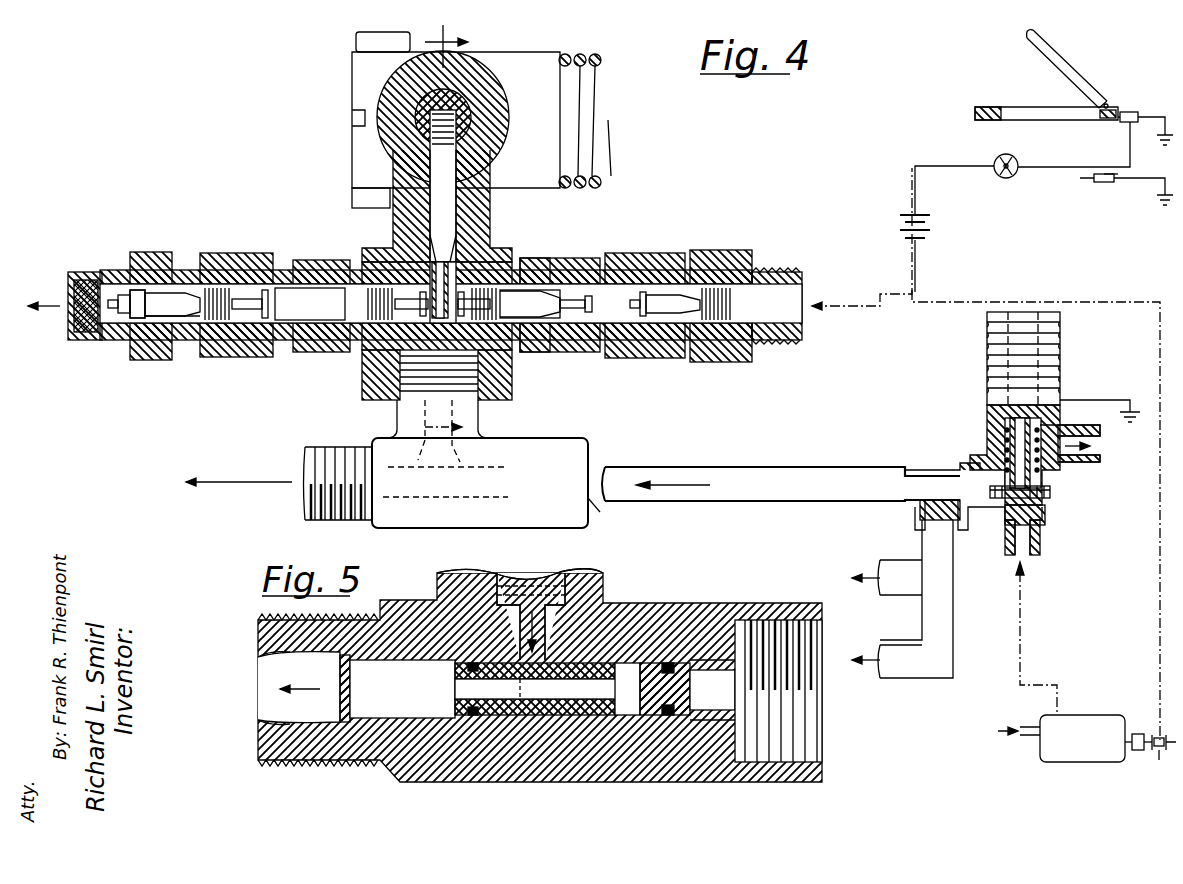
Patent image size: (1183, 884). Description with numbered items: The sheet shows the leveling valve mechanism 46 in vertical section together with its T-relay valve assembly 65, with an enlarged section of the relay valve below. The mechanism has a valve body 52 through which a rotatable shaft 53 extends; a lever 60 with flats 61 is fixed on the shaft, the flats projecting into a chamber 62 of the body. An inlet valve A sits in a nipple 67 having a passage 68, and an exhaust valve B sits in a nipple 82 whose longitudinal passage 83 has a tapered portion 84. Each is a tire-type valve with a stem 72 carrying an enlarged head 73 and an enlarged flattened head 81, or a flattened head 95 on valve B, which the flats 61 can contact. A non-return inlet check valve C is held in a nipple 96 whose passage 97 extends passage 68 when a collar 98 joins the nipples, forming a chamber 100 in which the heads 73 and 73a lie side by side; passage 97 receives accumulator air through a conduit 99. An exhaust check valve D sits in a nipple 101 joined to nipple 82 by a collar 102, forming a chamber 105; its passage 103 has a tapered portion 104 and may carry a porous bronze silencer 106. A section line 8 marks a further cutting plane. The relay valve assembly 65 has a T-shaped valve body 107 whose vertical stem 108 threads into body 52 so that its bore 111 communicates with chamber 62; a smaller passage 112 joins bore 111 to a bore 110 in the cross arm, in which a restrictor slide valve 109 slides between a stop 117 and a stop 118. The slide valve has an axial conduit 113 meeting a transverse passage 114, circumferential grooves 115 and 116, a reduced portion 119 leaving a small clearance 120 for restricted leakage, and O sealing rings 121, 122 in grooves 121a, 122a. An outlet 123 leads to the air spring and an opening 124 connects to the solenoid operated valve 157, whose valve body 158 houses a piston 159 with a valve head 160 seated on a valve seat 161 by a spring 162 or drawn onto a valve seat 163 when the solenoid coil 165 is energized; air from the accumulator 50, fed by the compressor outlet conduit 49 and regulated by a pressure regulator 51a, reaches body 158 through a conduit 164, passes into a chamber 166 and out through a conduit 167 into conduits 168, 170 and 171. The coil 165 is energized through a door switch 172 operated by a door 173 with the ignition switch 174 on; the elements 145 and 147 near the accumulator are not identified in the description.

In FIG. 4, the section line 8 is at (452, 230).
In FIG. 4, the leveling valve mechanism 46 is at (630, 207).
In FIG. 4, the outlet conduit 49 is at (1025, 737).
In FIG. 4, the air accumulator 50 is at (1082, 738).
In FIG. 4, the pressure regulator 51a is at (1138, 734).
In FIG. 4, the valve body 52 is at (485, 212).
In FIG. 4, the shaft 53 is at (462, 119).
In FIG. 4, the lever 60 is at (435, 222).
In FIG. 4, the flats 61 is at (448, 283).
In FIG. 4, the chamber 62 is at (380, 372).
In FIG. 4, the relay valve assembly 65 is at (592, 442).
In FIG. 5, the relay valve assembly 65 is at (678, 590).
In FIG. 4, the nipple 67 is at (572, 258).
In FIG. 4, the passage 68 is at (535, 262).
In FIG. 4, the stem 72 is at (118, 315).
In FIG. 4, the enlarged head 73 is at (135, 292).
In FIG. 4, the head 73a is at (658, 262).
In FIG. 4, the enlarged flattened head 81 is at (264, 290).
In FIG. 4, the nipple 82 is at (300, 352).
In FIG. 4, the longitudinal passage 83 is at (335, 352).
In FIG. 4, the tapered portion 84 is at (335, 262).
In FIG. 4, the flattened head 95 is at (425, 320).
In FIG. 4, the nipple 96 is at (728, 252).
In FIG. 4, the passage 97 is at (790, 328).
In FIG. 4, the collar 98 is at (660, 358).
In FIG. 4, the conduit 99 is at (880, 294).
In FIG. 4, the chamber 100 is at (622, 262).
In FIG. 4, the nipple 101 is at (155, 362).
In FIG. 4, the collar 102 is at (222, 253).
In FIG. 4, the passage 103 is at (165, 318).
In FIG. 4, the tapered portion 104 is at (190, 262).
In FIG. 4, the chamber 105 is at (232, 357).
In FIG. 4, the silencer 106 is at (68, 280).
In FIG. 4, the valve body 107 is at (515, 440).
In FIG. 5, the valve body 107 is at (758, 605).
In FIG. 4, the vertical stem 108 is at (398, 408).
In FIG. 5, the vertical stem 108 is at (437, 580).
In FIG. 5, the restrictor slide valve 109 is at (650, 662).
In FIG. 4, the bore 110 is at (430, 498).
In FIG. 5, the bore 110 is at (388, 715).
In FIG. 4, the bore 111 is at (418, 468).
In FIG. 5, the bore 111 is at (520, 575).
In FIG. 4, the passage 112 is at (452, 470).
In FIG. 5, the passage 112 is at (515, 622).
In FIG. 5, the longitudinal axial conduit 113 is at (460, 682).
In FIG. 5, the transverse passage 114 is at (622, 720).
In FIG. 5, the circumferential groove 115 is at (630, 663).
In FIG. 5, the circumferential groove 116 is at (530, 760).
In FIG. 5, the stop 117 is at (700, 760).
In FIG. 5, the stop 118 is at (340, 715).
In FIG. 5, the portion 119 is at (575, 716).
In FIG. 5, the clearance 120 is at (600, 686).
In FIG. 5, the O sealing ring 121 is at (668, 716).
In FIG. 5, the groove 121a is at (672, 662).
In FIG. 5, the O sealing ring 122 is at (480, 716).
In FIG. 5, the groove 122a is at (470, 663).
In FIG. 4, the outlet 123 is at (305, 494).
In FIG. 5, the outlet 123 is at (270, 662).
In FIG. 4, the opening 124 is at (610, 511).
In FIG. 5, the opening 124 is at (810, 745).
In FIG. 4, the switch 145 is at (1165, 735).
In FIG. 4, the lead 147 is at (1155, 757).
In FIG. 4, the solenoid operated valve 157 is at (968, 432).
In FIG. 4, the valve body 158 is at (1040, 535).
In FIG. 4, the piston 159 is at (1060, 415).
In FIG. 4, the valve head 160 is at (1040, 480).
In FIG. 4, the valve seat 161 is at (990, 490).
In FIG. 4, the spring 162 is at (1040, 470).
In FIG. 4, the valve seat 163 is at (990, 478).
In FIG. 4, the conduit 164 is at (1022, 598).
In FIG. 4, the electrical solenoid coil 165 is at (1062, 338).
In FIG. 4, the chamber 166 is at (982, 520).
In FIG. 4, the conduit 167 is at (935, 562).
In FIG. 4, the conduit 168 is at (795, 460).
In FIG. 4, the conduit 170 is at (890, 562).
In FIG. 4, the conduit 171 is at (903, 648).
In FIG. 4, the door switch 172 is at (1132, 112).
In FIG. 4, the door 173 is at (1070, 74).
In FIG. 4, the vehicle ignition switch 174 is at (1004, 178).
In FIG. 4, the inlet valve A is at (540, 330).
In FIG. 4, the exhaust valve B is at (315, 262).
In FIG. 4, the non-return inlet check valve C is at (712, 340).
In FIG. 4, the exhaust check valve D is at (160, 262).